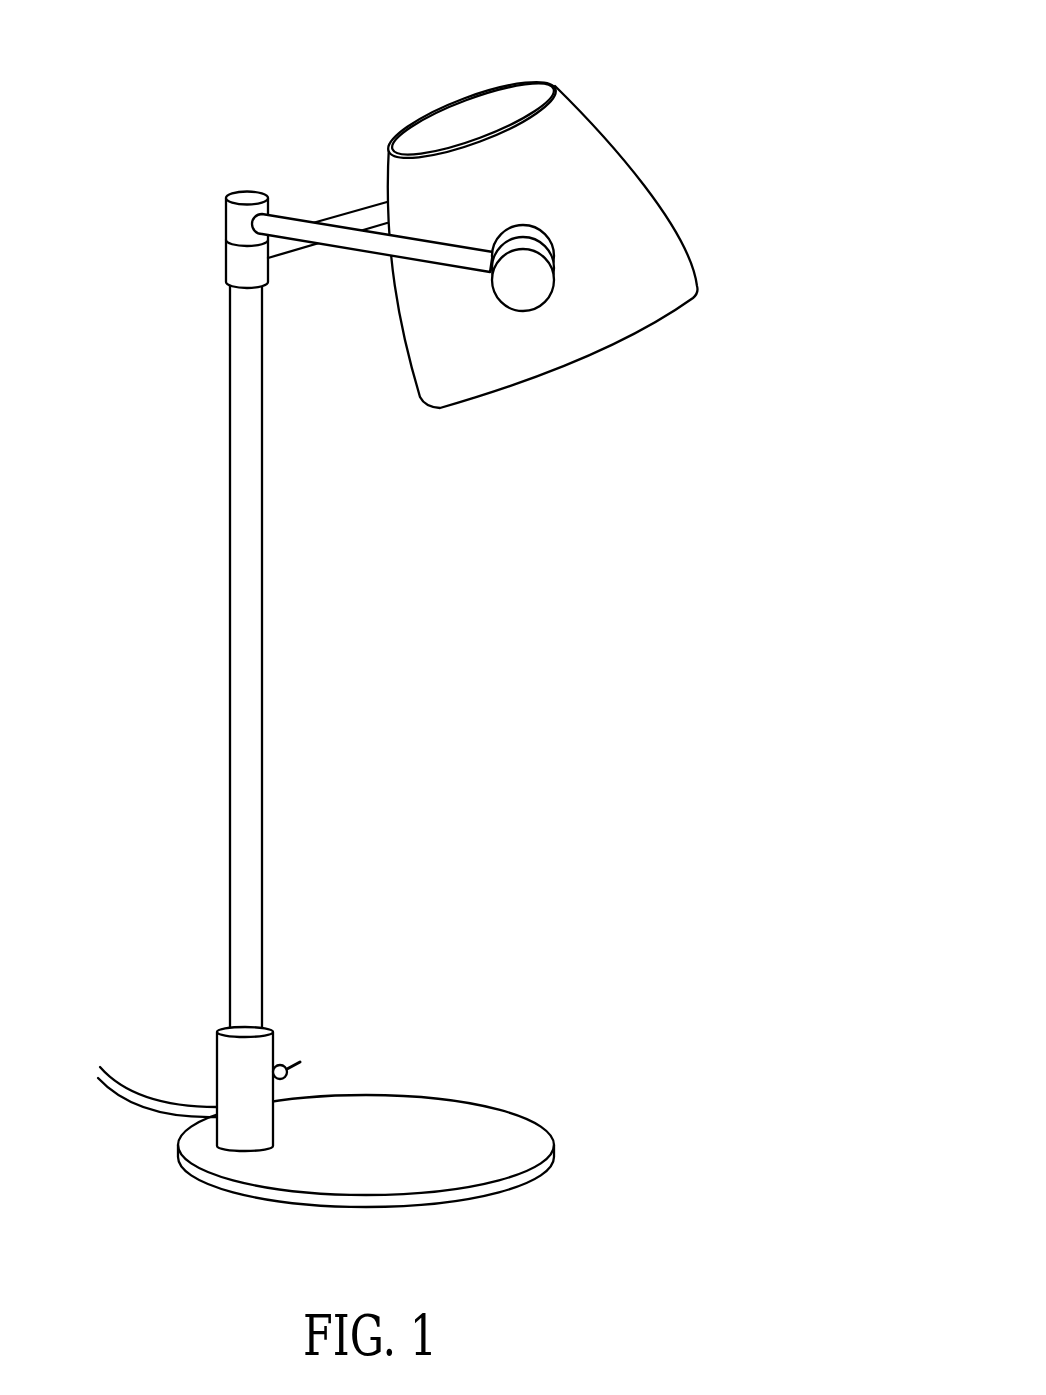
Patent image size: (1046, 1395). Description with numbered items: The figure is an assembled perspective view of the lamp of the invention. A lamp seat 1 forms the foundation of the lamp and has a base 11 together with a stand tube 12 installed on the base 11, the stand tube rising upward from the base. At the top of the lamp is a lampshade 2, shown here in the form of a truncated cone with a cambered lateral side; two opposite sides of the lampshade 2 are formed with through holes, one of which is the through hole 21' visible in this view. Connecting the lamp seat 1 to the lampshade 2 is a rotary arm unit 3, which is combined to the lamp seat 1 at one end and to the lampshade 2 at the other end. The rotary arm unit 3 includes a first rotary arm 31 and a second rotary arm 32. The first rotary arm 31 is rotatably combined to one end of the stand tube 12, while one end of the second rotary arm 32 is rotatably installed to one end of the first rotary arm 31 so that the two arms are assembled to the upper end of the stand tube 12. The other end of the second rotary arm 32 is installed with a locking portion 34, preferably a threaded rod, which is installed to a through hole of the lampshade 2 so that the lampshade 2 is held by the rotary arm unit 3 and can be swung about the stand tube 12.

The lamp seat 1 is at (464, 611).
The base 11 is at (500, 1127).
The stand tube 12 is at (240, 653).
The lampshade 2 is at (570, 153).
The through hole 21' is at (661, 251).
The rotary arm unit 3 is at (478, 246).
The first rotary arm 31 is at (373, 217).
The second rotary arm 32 is at (353, 240).
The locking portion 34 is at (548, 275).